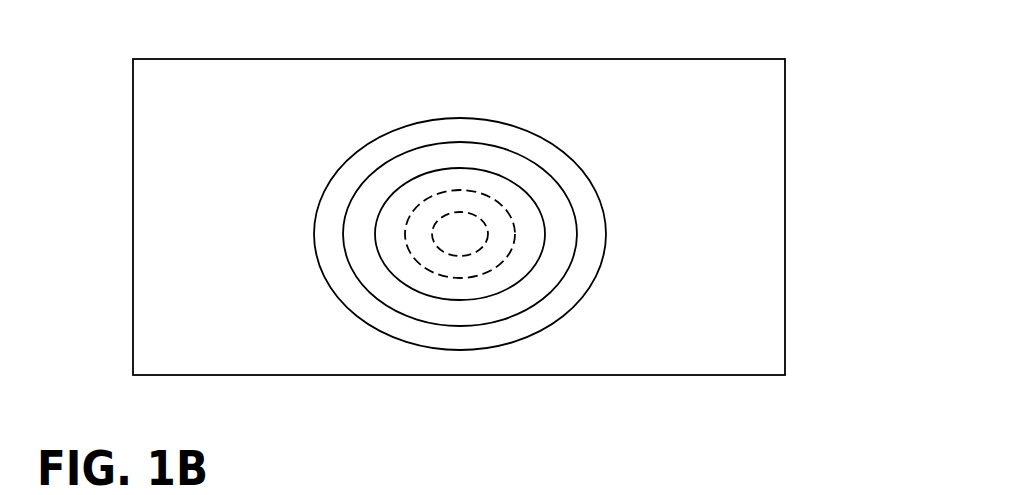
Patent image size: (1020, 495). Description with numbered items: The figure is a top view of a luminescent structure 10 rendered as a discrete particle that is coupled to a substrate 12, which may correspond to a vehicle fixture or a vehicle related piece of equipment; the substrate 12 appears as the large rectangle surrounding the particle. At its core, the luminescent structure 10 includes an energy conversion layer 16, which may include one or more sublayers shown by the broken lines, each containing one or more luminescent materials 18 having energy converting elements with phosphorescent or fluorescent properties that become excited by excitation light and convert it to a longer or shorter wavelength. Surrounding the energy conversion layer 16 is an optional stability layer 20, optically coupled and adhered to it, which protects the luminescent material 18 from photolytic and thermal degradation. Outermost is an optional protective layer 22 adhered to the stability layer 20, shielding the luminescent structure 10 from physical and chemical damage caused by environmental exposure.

The luminescent structure 10 is at (465, 217).
The substrate 12 is at (785, 168).
The energy conversion layer 16 is at (520, 282).
The luminescent material 18 is at (447, 252).
The stability layer 20 is at (530, 161).
The protective layer 22 is at (500, 121).